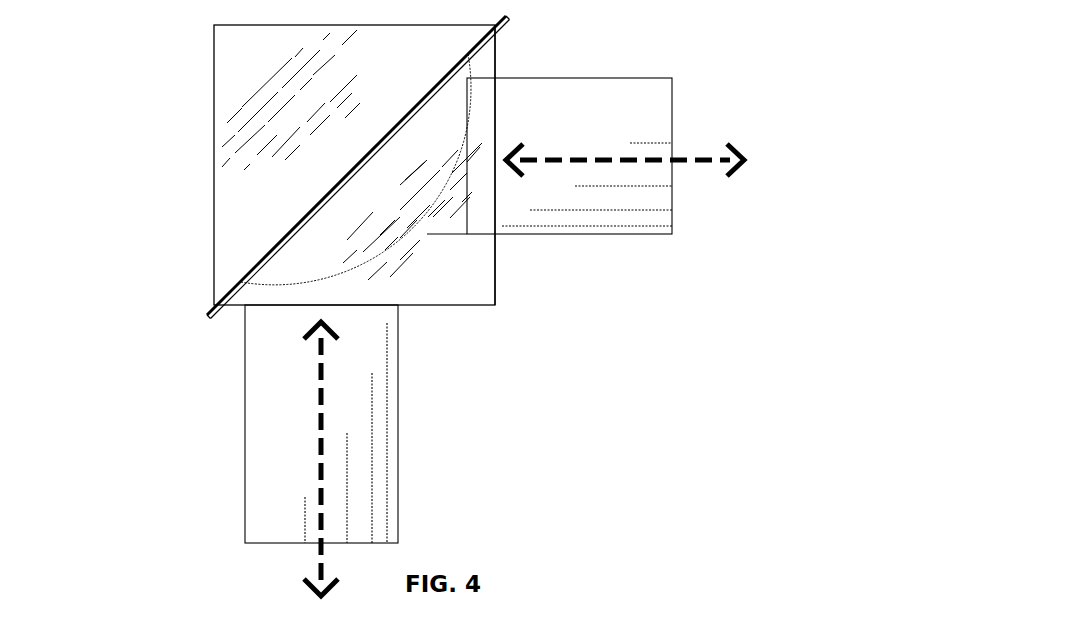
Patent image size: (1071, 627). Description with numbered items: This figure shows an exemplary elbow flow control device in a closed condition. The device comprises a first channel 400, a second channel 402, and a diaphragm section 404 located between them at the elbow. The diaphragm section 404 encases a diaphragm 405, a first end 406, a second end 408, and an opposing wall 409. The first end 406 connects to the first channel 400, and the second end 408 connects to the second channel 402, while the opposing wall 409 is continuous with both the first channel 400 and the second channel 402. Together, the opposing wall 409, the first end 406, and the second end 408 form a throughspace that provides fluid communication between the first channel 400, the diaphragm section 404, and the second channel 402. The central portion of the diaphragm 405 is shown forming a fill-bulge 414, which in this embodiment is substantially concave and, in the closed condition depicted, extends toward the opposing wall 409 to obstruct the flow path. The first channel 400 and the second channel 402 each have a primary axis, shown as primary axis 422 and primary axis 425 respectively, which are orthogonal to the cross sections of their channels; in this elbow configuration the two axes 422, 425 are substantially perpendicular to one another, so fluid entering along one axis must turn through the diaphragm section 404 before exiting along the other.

The first channel 400 is at (592, 200).
The second channel 402 is at (355, 438).
The diaphragm section 404 is at (408, 285).
The diaphragm 405 is at (495, 188).
The first end 406 is at (428, 123).
The second end 408 is at (322, 303).
The opposing wall 409 is at (496, 307).
The fill-bulge 414 is at (352, 268).
The primary axis of first channel 422 is at (648, 165).
The primary axis of second channel 425 is at (312, 492).